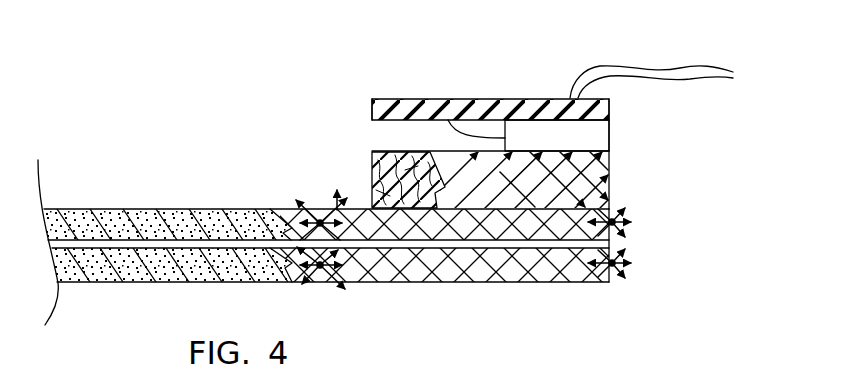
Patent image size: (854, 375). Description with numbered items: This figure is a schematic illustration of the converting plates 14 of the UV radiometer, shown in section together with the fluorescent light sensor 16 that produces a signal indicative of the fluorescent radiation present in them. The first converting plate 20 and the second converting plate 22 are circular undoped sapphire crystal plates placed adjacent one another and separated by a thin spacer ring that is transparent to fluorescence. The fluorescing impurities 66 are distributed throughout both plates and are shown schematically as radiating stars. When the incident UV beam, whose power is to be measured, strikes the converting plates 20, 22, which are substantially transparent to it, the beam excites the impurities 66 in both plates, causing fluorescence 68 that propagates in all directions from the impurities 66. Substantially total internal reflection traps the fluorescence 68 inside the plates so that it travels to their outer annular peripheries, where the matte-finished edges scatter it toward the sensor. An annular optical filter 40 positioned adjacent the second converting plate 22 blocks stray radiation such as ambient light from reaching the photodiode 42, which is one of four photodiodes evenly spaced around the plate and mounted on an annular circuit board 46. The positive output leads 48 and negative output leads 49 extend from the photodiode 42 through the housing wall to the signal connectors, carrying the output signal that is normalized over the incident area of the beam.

The UV radiation-to-fluorescent emission converting plates 14 is at (120, 196).
The fluorescent light sensor 16 is at (482, 86).
The first converting plate 20 is at (192, 274).
The second converting plate 22 is at (190, 209).
The annular optical filter 40 is at (372, 182).
The photodiode 42 is at (597, 135).
The annular circuit board 46 is at (400, 99).
The positive output leads 48 is at (682, 84).
The negative output leads 49 is at (655, 70).
The fluorescing impurities 66 is at (303, 206).
The fluorescence 68 is at (492, 177).